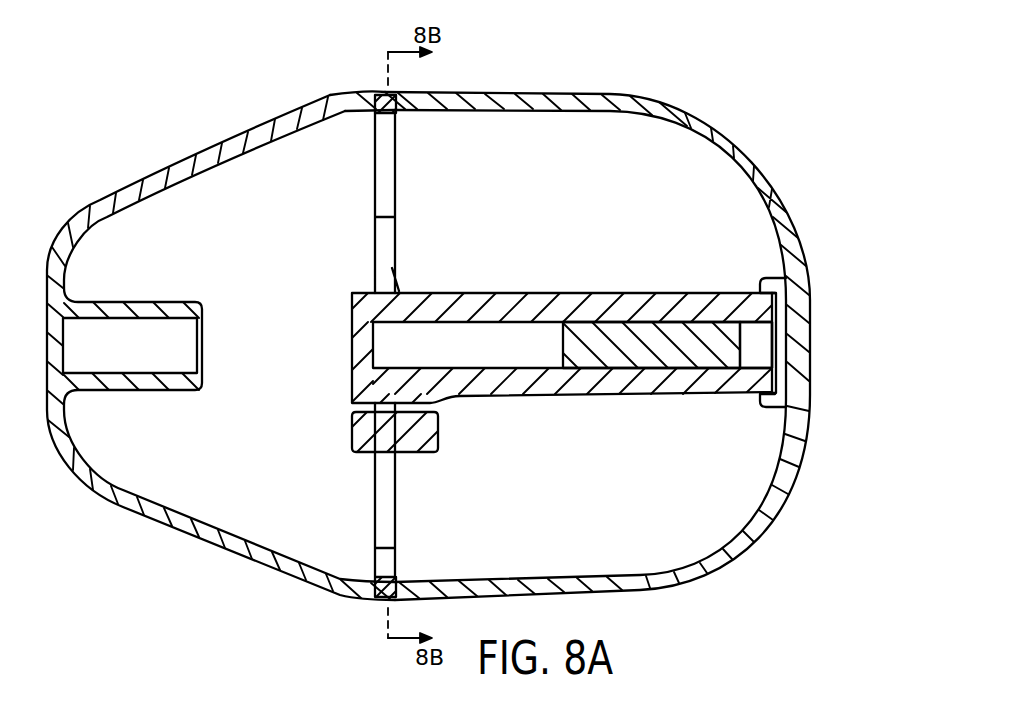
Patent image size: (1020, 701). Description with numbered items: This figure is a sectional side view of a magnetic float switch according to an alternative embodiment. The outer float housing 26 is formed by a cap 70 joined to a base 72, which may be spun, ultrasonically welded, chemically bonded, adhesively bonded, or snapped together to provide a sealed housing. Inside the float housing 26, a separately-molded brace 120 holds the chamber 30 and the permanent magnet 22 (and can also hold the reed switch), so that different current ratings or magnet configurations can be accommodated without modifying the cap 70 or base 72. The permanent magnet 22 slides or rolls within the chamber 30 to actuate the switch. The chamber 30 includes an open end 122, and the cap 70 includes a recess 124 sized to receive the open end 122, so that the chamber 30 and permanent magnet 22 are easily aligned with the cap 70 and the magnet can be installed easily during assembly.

The cap 70 is at (793, 208).
The base 72 is at (224, 147).
The float housing 26 is at (318, 100).
The brace 120 is at (397, 163).
The chamber 30 is at (471, 355).
The permanent magnet 22 is at (680, 358).
The open end 122 is at (757, 347).
The recess 124 is at (778, 338).